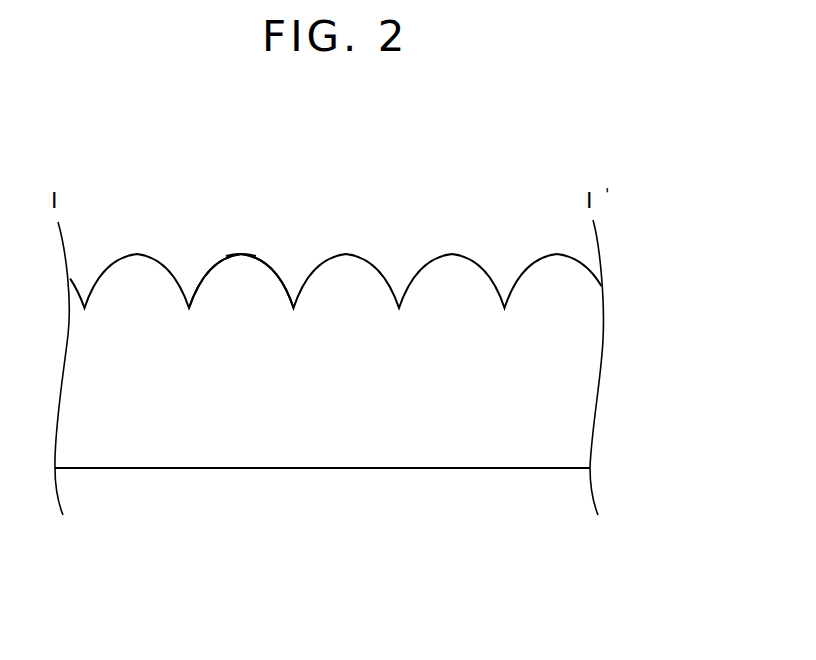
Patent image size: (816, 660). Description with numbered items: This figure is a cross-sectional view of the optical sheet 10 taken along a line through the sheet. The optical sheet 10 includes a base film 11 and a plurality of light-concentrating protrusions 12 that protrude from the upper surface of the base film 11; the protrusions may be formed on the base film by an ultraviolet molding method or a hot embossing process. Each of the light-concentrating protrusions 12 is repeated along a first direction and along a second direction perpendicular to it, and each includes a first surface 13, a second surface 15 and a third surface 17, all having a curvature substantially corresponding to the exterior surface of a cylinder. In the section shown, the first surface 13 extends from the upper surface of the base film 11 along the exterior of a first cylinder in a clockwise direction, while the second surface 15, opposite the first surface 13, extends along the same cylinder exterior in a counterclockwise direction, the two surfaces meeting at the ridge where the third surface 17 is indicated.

The optical sheet 10 is at (386, 352).
The base film 11 is at (575, 420).
The light-concentrating protrusions 12 is at (372, 248).
The first surface 13 is at (208, 267).
The second surface 15 is at (278, 267).
The third surface 17 is at (242, 270).